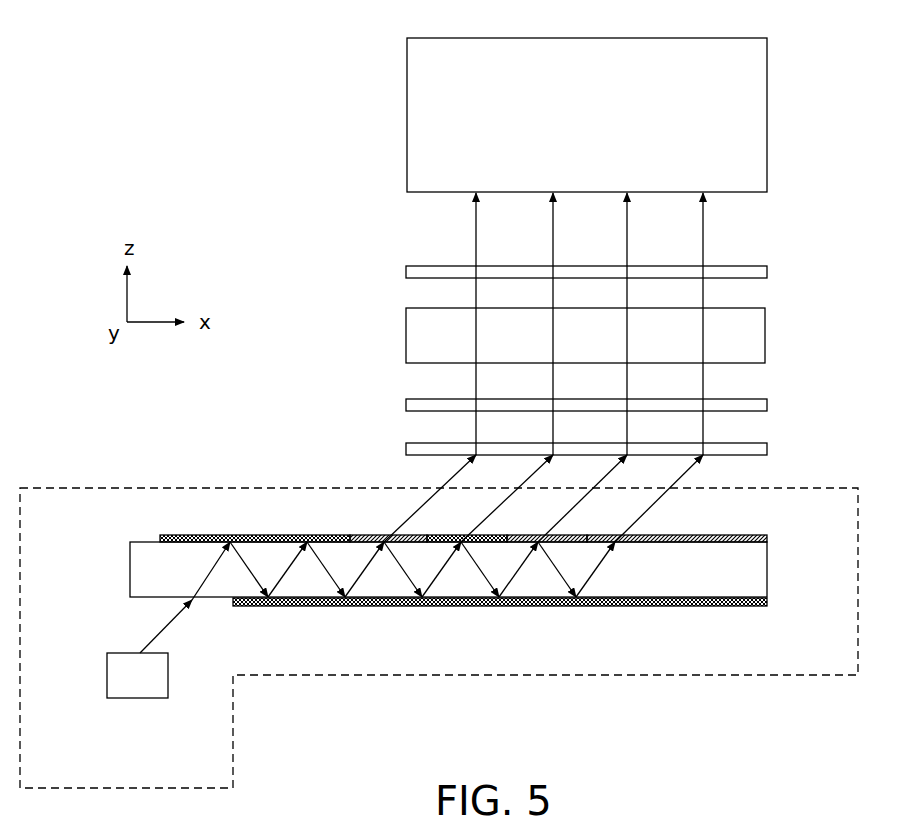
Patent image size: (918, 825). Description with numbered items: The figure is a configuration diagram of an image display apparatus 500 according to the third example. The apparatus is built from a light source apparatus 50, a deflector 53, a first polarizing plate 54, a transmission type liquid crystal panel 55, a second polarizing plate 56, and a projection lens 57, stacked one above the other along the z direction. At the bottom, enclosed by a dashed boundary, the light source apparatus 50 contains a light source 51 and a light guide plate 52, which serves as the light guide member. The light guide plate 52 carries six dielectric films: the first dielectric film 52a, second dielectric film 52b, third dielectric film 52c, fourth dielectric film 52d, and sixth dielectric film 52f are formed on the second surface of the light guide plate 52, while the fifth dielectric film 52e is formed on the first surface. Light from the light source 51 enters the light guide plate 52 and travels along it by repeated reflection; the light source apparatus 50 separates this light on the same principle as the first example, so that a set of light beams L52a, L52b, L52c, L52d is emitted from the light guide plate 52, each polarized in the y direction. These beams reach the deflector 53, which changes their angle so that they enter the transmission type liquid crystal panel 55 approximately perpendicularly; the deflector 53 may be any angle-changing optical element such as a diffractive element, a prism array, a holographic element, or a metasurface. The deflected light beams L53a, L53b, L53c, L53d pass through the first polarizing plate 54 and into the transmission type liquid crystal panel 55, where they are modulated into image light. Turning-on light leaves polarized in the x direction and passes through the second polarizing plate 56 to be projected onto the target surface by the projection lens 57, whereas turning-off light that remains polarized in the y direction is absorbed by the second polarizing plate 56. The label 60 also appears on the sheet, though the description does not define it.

The image display apparatus 500 is at (848, 24).
The eye / viewer 60 is at (817, 814).
The projection lens 57 is at (767, 120).
The second polarizing plate 56 is at (767, 275).
The transmission type liquid crystal panel 55 is at (406, 345).
The first polarizing plate 54 is at (767, 410).
The deflector 53 is at (406, 448).
The deflected light beam L53a is at (444, 324).
The deflected light beam L53b is at (521, 324).
The deflected light beam L53c is at (597, 324).
The deflected light beam L53d is at (673, 324).
The light beam L52a is at (430, 498).
The light beam L52b is at (507, 498).
The light beam L52c is at (582, 498).
The light beam L52d is at (659, 498).
The light source apparatus 50 is at (62, 486).
The light guide plate 52 is at (130, 573).
The sixth dielectric film 52f is at (212, 534).
The first dielectric film 52a is at (356, 534).
The second dielectric film 52b is at (437, 534).
The third dielectric film 52c is at (514, 534).
The fourth dielectric film 52d is at (706, 534).
The fifth dielectric film 52e is at (760, 607).
The light source 51 is at (140, 698).